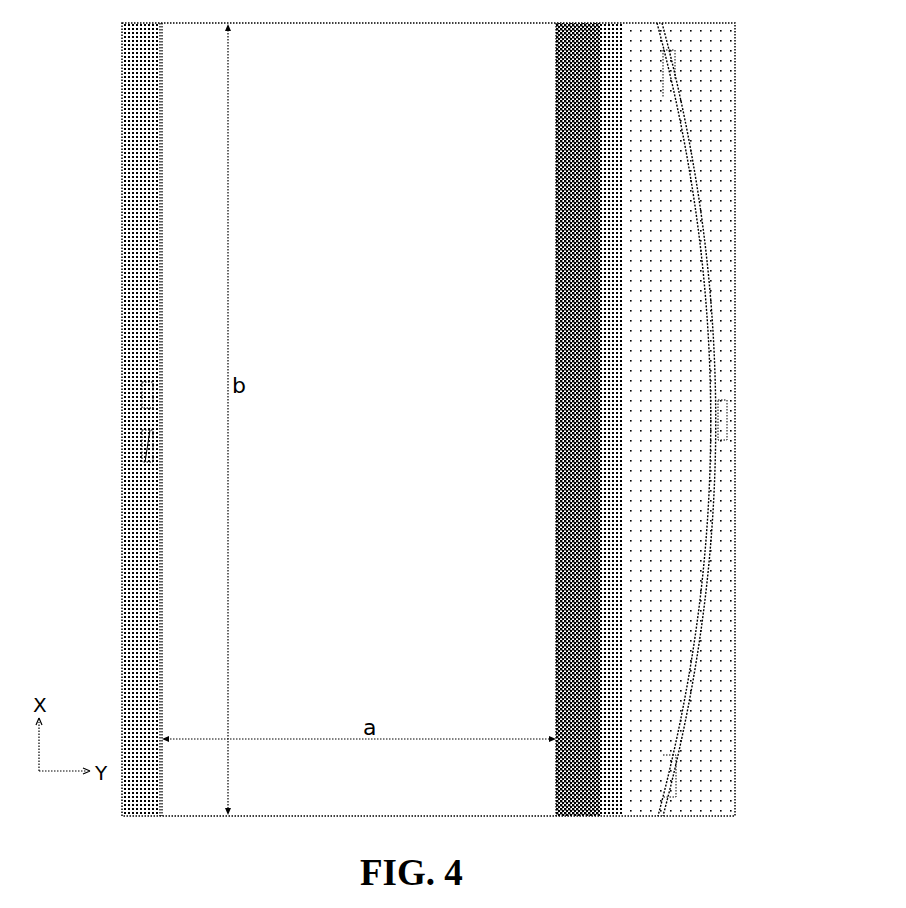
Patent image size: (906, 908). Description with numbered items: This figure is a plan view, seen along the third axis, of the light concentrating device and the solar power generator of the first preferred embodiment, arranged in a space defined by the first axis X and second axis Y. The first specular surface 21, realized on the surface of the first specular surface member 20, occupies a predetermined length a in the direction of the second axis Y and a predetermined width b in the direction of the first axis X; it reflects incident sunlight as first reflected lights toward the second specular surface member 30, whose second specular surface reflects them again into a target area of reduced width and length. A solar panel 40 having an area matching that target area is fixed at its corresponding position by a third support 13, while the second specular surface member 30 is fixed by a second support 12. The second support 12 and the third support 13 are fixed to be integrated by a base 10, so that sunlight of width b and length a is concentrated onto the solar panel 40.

The base 10 is at (634, 441).
The second support 12 is at (675, 50).
The third support 13 is at (145, 464).
The first specular surface member 20 is at (158, 218).
The first specular surface 21 is at (371, 441).
The second specular surface member 30 is at (690, 193).
The solar panel 40 is at (158, 375).